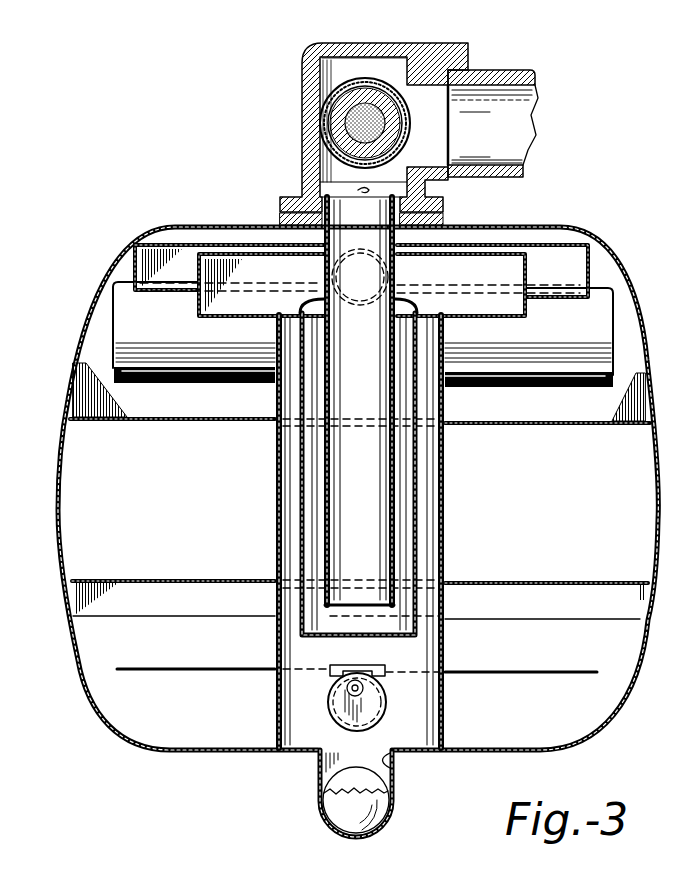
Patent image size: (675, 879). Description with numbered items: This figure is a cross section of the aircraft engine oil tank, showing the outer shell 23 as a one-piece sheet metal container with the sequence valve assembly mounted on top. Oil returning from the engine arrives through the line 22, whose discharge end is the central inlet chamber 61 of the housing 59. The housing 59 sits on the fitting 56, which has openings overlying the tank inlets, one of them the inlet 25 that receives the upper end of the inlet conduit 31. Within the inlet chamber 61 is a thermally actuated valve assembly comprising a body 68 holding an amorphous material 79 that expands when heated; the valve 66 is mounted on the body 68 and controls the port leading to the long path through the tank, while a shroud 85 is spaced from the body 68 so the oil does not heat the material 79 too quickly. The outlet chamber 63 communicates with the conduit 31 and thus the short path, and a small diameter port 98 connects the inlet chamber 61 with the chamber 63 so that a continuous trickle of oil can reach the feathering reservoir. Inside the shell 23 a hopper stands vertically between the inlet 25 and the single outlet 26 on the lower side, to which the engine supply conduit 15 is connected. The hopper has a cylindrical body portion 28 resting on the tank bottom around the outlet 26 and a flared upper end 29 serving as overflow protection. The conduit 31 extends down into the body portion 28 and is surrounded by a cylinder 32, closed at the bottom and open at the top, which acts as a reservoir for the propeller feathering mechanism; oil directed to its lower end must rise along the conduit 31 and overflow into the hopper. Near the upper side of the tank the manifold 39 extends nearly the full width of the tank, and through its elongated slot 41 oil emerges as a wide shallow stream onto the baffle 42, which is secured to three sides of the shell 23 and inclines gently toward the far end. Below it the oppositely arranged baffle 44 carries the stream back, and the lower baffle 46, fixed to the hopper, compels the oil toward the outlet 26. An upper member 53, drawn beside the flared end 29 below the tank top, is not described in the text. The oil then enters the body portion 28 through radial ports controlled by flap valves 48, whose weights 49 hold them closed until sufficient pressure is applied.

The engine supply conduit 15 is at (330, 806).
The line 22 is at (514, 70).
The outer shell 23 is at (80, 345).
The inlet 25 is at (440, 202).
The outlet 26 is at (393, 772).
The cylindrical body portion 28 is at (447, 499).
The flared upper end 29 is at (200, 270).
The inlet conduit 31 is at (398, 250).
The cylinder 32 is at (320, 487).
The manifold 39 is at (122, 312).
The longitudinally elongated slot 41 is at (160, 384).
The baffle 42 is at (105, 394).
The baffle 44 is at (148, 579).
The baffle 46 is at (148, 667).
The flap valves 48 is at (384, 715).
The weights 49 is at (364, 688).
The upper baffle 53 is at (133, 262).
The fitting 56 is at (282, 218).
The housing 59 is at (306, 53).
The central inlet chamber 61 is at (372, 62).
The outlet chamber 63 is at (332, 189).
The valve 66 is at (383, 85).
The body 68 is at (350, 130).
The amorphous material 79 is at (325, 122).
The shroud 85 is at (336, 97).
The port 98 is at (368, 194).